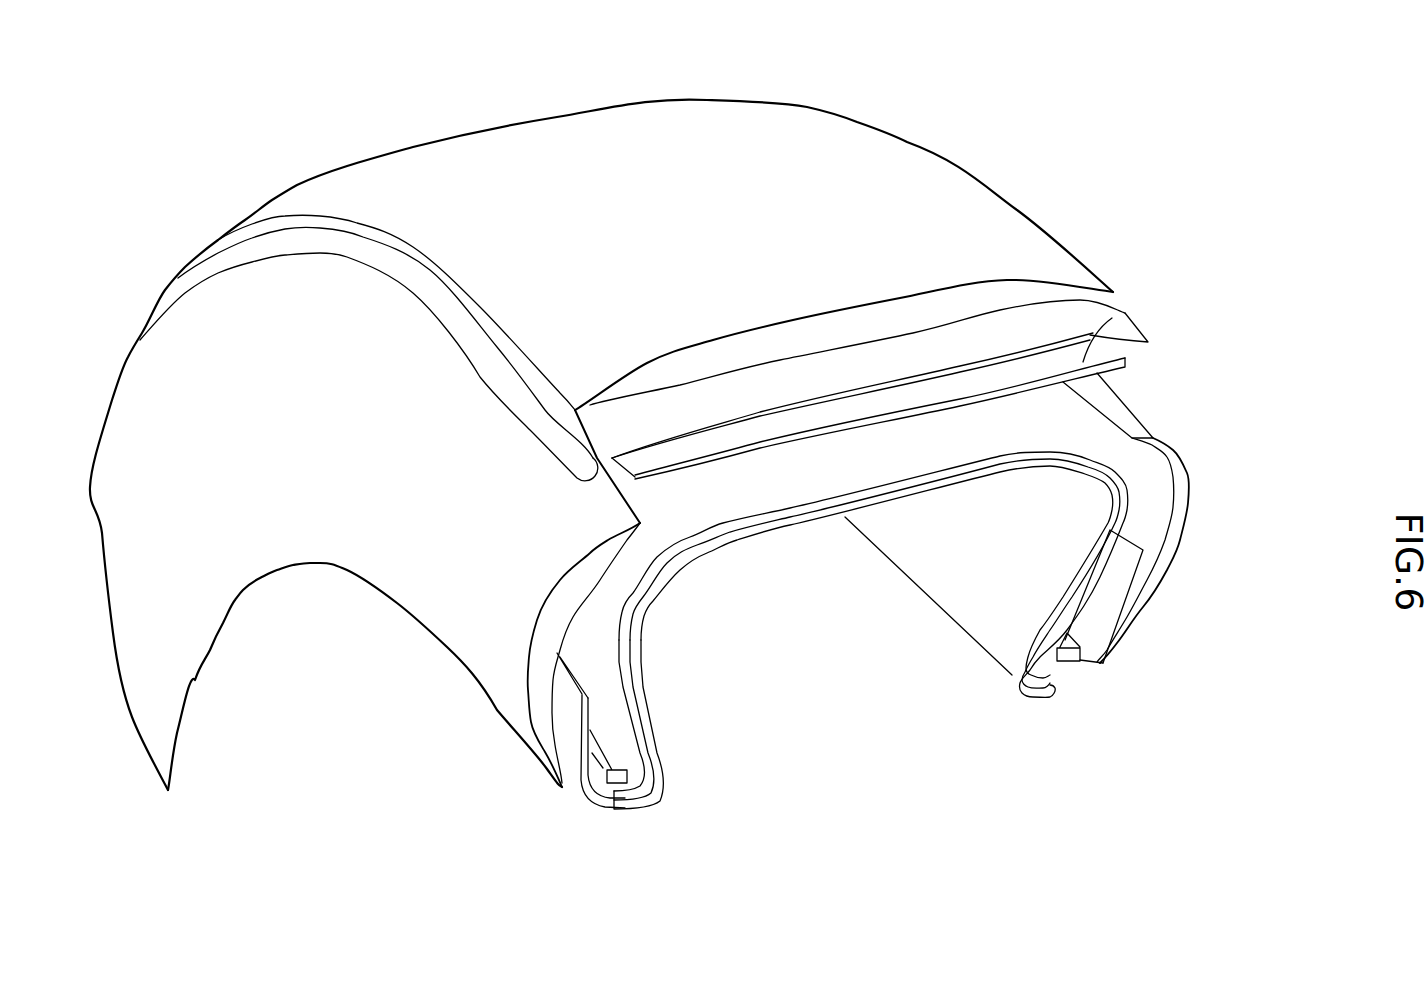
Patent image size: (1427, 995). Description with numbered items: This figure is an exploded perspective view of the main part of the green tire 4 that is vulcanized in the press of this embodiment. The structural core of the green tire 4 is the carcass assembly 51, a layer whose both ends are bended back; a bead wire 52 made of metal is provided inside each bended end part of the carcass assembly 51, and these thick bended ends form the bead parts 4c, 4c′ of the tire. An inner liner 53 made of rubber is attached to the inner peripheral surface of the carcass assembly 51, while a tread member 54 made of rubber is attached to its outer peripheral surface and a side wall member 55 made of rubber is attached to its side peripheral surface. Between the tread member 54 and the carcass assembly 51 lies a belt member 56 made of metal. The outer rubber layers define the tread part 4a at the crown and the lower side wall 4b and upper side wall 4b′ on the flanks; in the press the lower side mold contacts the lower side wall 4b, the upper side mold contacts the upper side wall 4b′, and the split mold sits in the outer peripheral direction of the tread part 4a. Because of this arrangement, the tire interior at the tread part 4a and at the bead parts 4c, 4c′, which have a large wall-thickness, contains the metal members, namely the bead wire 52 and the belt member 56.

The green tire 4 is at (1158, 231).
The tread part 4a is at (910, 155).
The lower side wall 4b is at (1185, 452).
The upper side wall 4b′ is at (493, 568).
The bead part 4c is at (1090, 678).
The bead part 4c′ is at (587, 813).
The carcass assembly 51 is at (623, 632).
The bead wire 52 is at (627, 774).
The inner liner 53 is at (655, 712).
The tread member 54 is at (1042, 330).
The side wall member 55 is at (1168, 550).
The belt member 56 is at (1120, 313).